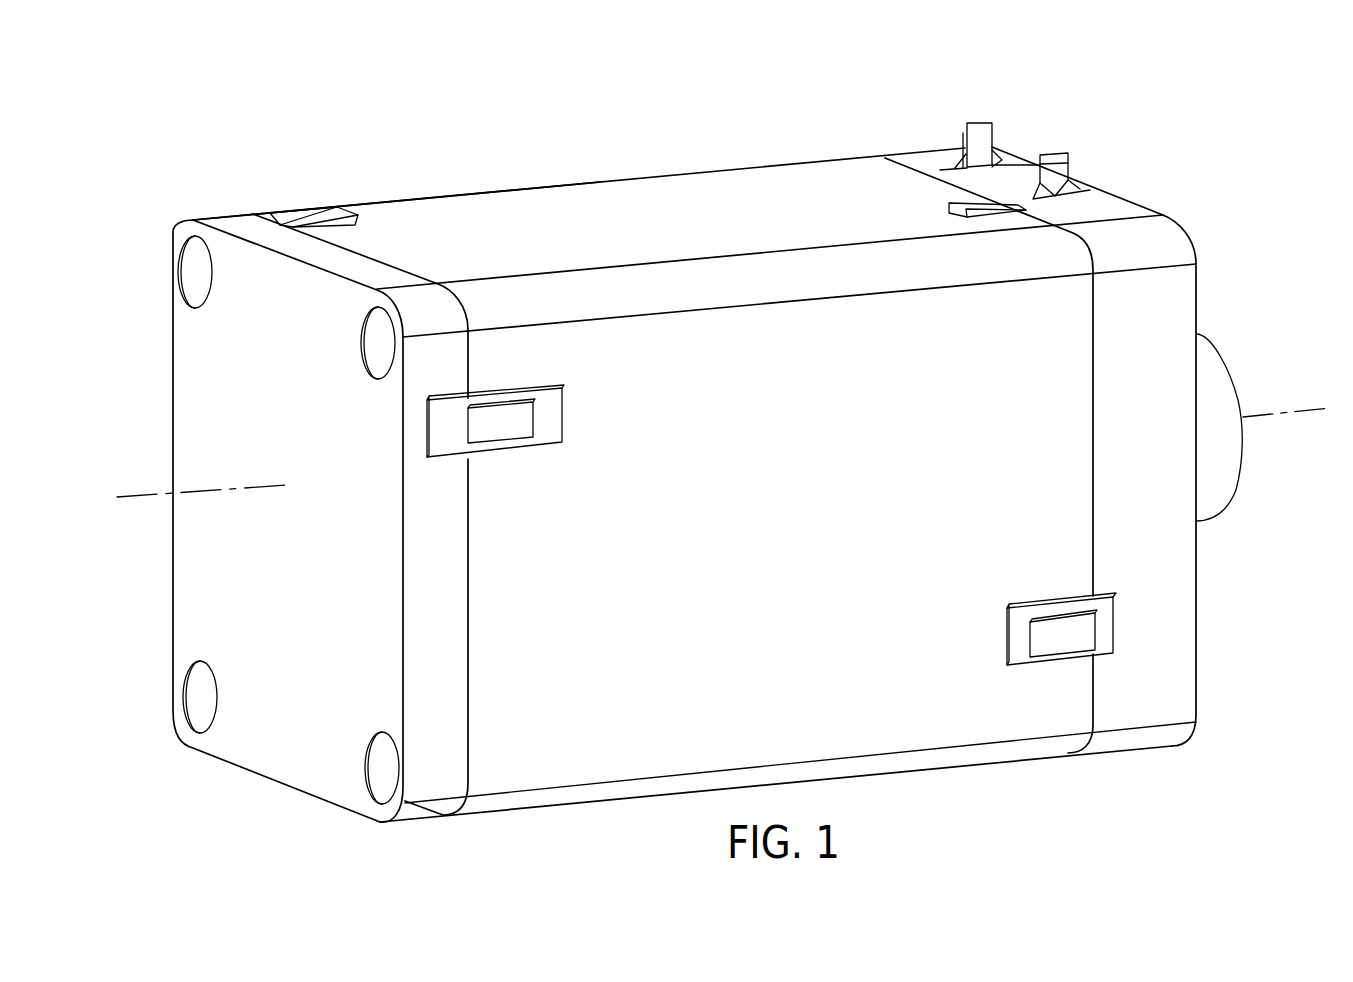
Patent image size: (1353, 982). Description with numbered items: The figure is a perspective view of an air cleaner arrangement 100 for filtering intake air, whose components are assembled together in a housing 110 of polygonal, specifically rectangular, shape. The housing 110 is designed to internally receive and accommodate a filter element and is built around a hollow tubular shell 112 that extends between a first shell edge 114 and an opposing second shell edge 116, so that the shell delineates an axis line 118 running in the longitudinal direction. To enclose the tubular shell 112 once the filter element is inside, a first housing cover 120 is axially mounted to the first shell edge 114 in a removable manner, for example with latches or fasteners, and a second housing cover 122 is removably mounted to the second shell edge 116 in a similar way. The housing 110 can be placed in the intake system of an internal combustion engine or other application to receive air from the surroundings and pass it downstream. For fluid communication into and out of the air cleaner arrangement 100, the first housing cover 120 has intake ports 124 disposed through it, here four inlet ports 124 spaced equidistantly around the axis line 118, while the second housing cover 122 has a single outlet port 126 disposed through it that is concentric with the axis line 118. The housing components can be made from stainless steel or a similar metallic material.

The air cleaner arrangement 100 is at (240, 106).
The housing 110 is at (253, 213).
The hollow tubular shell 112 is at (420, 198).
The first shell edge 114 is at (390, 263).
The second shell edge 116 is at (912, 157).
The axis line 118 is at (140, 492).
The first housing cover 120 is at (198, 563).
The second housing cover 122 is at (1196, 658).
The intake ports 124 is at (377, 343).
The outlet port 126 is at (1242, 474).